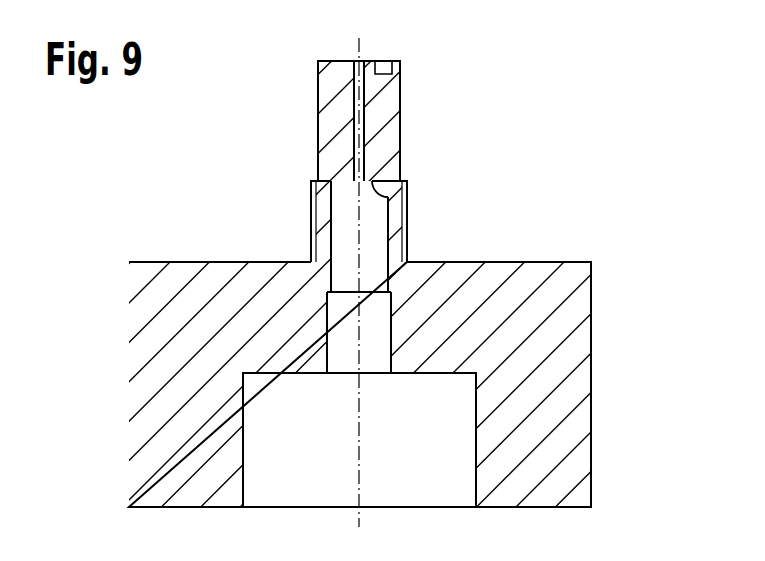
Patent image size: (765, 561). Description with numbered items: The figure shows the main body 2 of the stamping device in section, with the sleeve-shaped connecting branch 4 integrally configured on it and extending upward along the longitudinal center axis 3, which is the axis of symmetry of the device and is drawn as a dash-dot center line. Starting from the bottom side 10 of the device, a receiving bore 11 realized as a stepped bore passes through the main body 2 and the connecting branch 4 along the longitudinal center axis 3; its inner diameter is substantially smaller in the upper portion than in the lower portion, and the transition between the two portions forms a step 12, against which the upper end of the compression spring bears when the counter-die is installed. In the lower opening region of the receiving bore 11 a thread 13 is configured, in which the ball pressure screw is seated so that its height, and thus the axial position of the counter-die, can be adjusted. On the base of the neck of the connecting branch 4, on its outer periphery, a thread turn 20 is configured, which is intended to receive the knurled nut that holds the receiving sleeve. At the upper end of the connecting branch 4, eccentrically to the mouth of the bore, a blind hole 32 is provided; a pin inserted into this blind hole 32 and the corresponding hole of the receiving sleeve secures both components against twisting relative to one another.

The main body 2 is at (591, 348).
The longitudinal center axis 3 is at (362, 490).
The connecting branch 4 is at (400, 125).
The bottom side 10 is at (428, 373).
The receiving bore 11 is at (338, 373).
The step 12 is at (388, 188).
The thread 13 is at (383, 373).
The thread turn 20 is at (312, 231).
The blind hole 32 is at (400, 62).